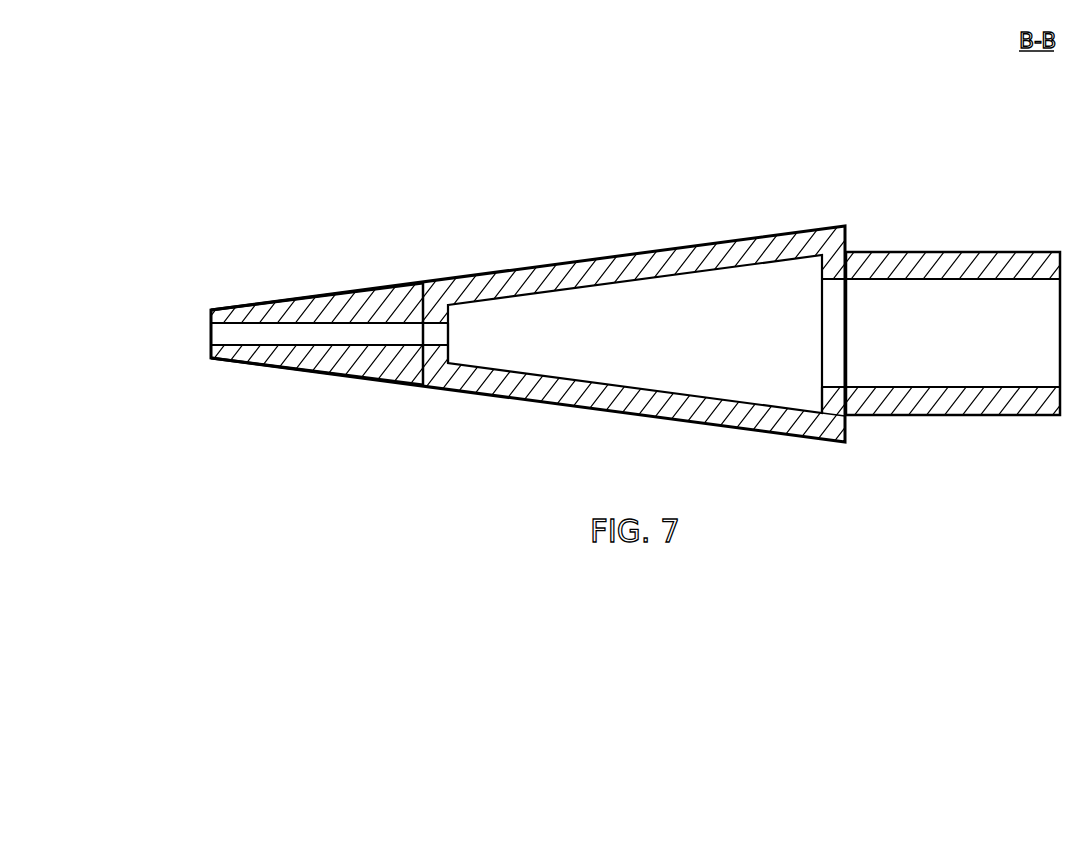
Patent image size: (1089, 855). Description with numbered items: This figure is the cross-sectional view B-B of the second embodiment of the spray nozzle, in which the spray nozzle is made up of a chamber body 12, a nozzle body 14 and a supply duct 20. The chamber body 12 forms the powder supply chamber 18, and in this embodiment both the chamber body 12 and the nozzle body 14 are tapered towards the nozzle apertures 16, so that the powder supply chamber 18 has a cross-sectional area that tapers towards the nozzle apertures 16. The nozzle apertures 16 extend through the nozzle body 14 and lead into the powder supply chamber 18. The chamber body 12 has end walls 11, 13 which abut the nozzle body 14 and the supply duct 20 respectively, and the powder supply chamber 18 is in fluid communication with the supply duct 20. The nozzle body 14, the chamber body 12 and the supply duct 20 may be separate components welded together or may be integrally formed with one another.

The end wall 11 is at (455, 368).
The chamber body 12 is at (582, 262).
The end wall 13 is at (822, 404).
The nozzle body 14 is at (337, 294).
The nozzle apertures 16 is at (228, 335).
The powder supply chamber 18 is at (683, 310).
The supply duct 20 is at (945, 268).